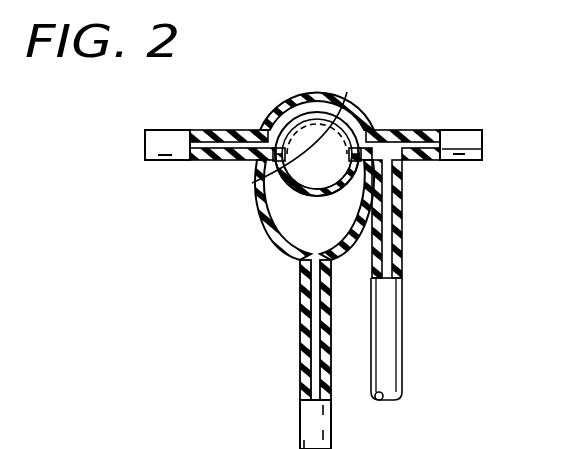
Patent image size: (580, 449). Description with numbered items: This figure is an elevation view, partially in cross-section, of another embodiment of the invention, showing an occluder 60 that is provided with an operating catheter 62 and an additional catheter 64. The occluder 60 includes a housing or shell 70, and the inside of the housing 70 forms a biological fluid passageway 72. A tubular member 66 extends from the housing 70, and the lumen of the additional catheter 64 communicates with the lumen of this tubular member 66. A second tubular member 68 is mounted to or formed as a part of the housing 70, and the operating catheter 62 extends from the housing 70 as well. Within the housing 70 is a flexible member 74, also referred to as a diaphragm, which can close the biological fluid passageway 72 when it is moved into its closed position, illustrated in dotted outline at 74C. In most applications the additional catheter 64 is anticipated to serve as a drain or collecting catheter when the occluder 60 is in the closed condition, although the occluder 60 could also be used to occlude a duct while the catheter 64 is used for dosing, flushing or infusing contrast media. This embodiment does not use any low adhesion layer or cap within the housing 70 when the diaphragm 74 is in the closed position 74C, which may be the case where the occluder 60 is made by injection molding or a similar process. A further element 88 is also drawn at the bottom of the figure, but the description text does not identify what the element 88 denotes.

The tee fitting body 60 is at (359, 99).
The outlet stem tube 62 is at (300, 425).
The drain tube 64 is at (403, 322).
The right arm 66 is at (457, 130).
The left arm 68 is at (163, 130).
The central bore 70 is at (315, 143).
The seal ring 72 is at (320, 125).
The inner tube 74 is at (262, 187).
The curved tube portion 74C is at (262, 188).
The connector 88 is at (151, 442).